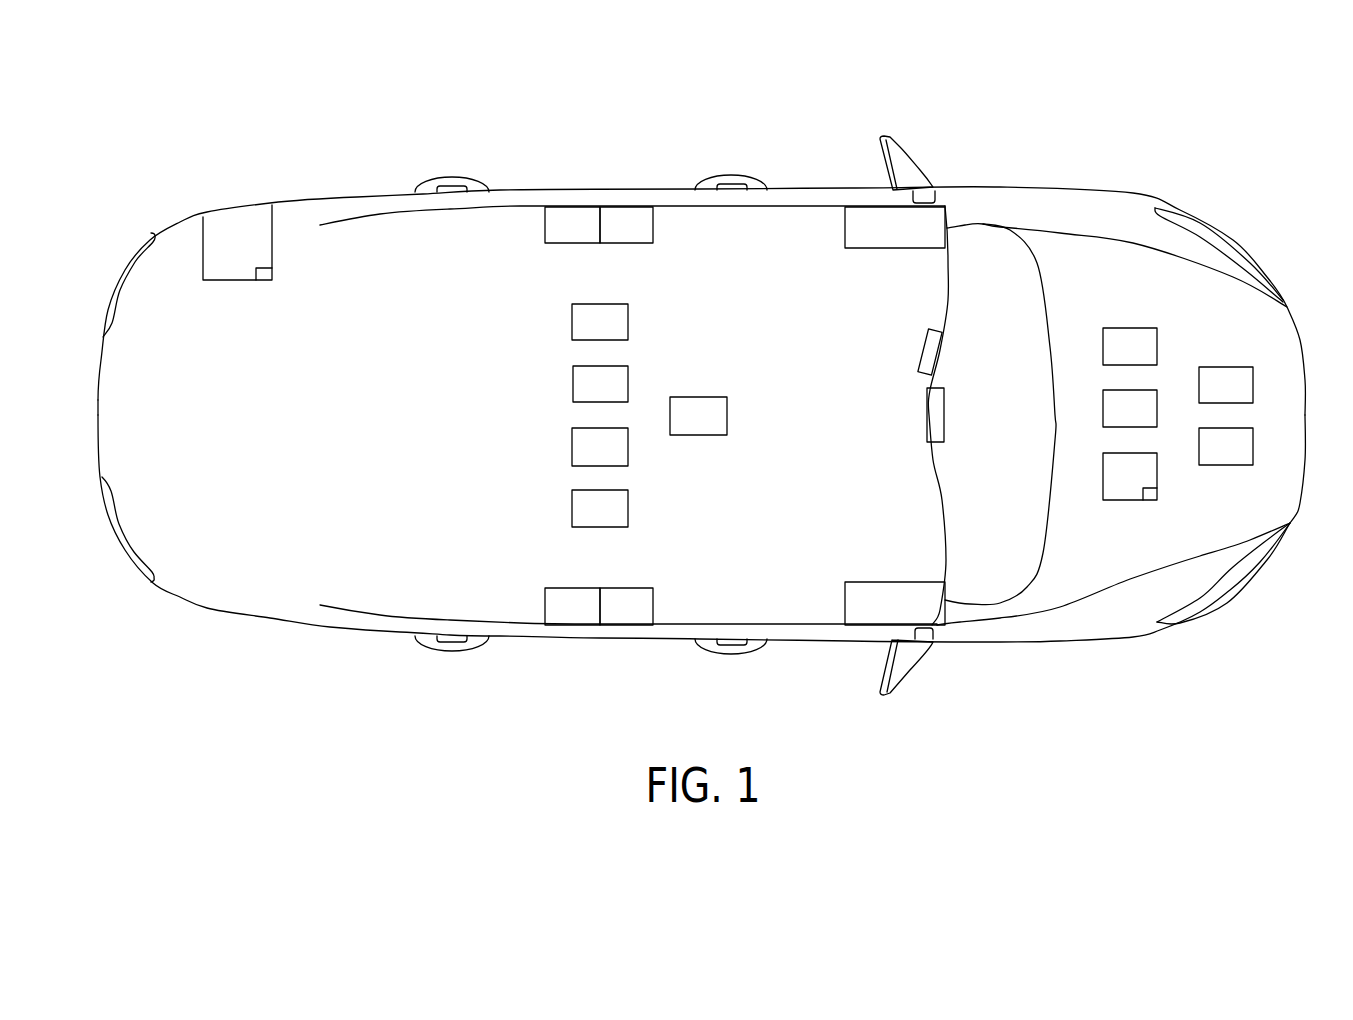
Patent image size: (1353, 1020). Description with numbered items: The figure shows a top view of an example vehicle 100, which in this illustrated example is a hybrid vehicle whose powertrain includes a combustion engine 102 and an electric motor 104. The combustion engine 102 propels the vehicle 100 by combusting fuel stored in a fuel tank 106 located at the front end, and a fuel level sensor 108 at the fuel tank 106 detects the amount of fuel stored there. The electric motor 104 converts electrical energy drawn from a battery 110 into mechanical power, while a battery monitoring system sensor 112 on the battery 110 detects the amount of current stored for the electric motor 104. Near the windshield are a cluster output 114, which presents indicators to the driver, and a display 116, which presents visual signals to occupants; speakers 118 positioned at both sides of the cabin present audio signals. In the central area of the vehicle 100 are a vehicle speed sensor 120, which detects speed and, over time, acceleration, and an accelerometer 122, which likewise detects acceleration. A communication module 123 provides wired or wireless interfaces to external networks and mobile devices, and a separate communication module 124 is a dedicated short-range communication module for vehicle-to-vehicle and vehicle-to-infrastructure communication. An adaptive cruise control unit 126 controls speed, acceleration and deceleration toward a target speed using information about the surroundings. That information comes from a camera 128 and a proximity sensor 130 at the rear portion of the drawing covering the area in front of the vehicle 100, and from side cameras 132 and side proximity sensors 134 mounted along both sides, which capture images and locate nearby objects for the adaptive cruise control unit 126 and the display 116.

The vehicle 100 is at (1109, 120).
The combustion engine 102 is at (1112, 360).
The electric motor 104 is at (1112, 422).
The fuel tank 106 is at (222, 251).
The fuel level sensor 108 is at (262, 281).
The battery 110 is at (1112, 479).
The battery monitoring system (BMS) sensor 112 is at (1151, 501).
The cluster output 114 is at (920, 347).
The display 116 is at (933, 412).
The speakers 118 is at (858, 224).
The vehicle speed sensor 120 is at (582, 335).
The accelerometer 122 is at (582, 397).
The communication module 123 is at (680, 430).
The communication module 124 is at (582, 461).
The adaptive cruise control unit 126 is at (582, 522).
The camera 128 is at (1208, 398).
The proximity sensor 130 is at (1208, 460).
The cameras 132 is at (608, 238).
The proximity sensors 134 is at (554, 238).